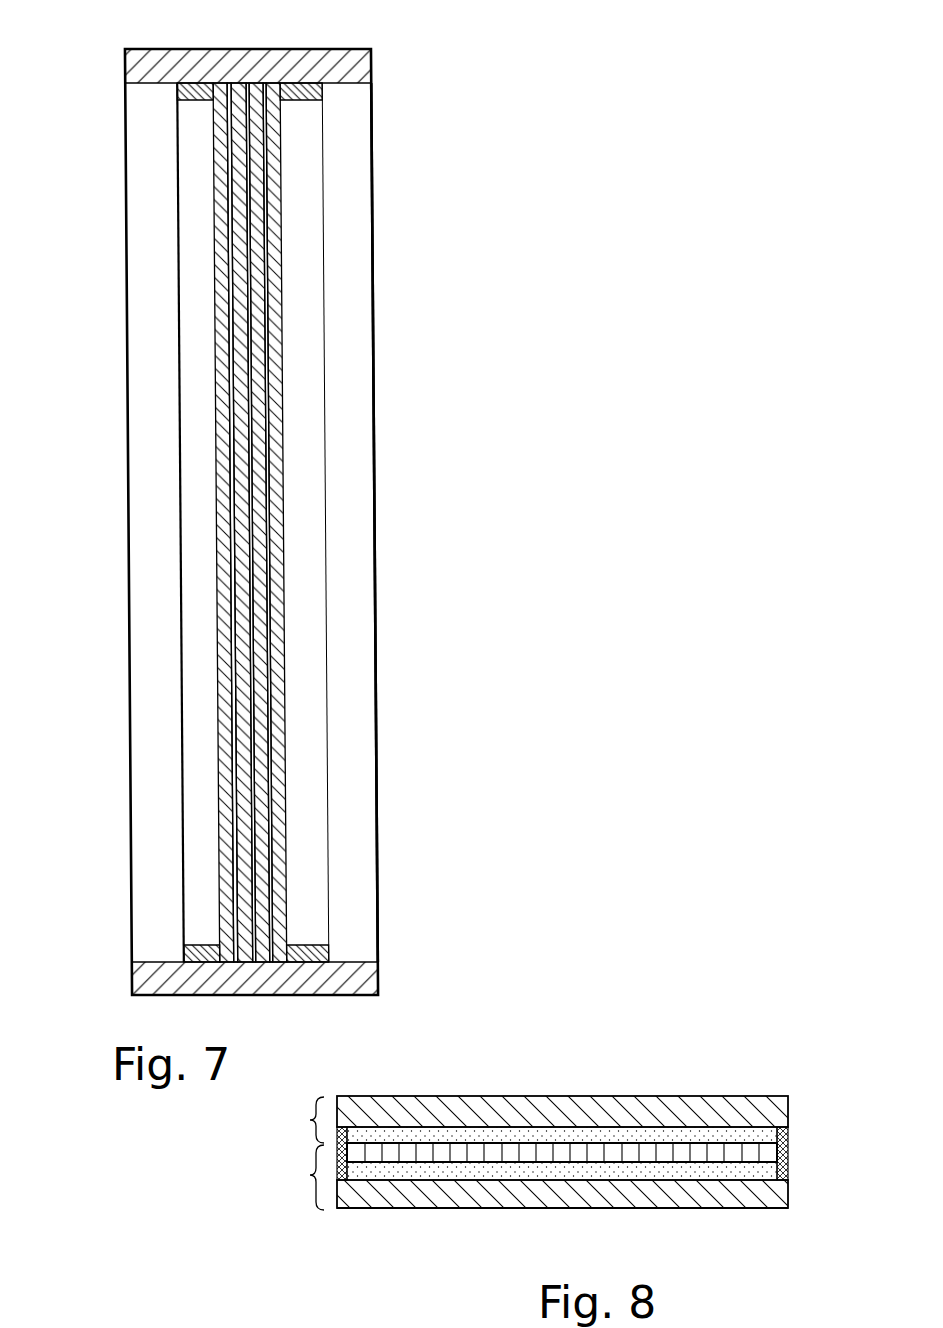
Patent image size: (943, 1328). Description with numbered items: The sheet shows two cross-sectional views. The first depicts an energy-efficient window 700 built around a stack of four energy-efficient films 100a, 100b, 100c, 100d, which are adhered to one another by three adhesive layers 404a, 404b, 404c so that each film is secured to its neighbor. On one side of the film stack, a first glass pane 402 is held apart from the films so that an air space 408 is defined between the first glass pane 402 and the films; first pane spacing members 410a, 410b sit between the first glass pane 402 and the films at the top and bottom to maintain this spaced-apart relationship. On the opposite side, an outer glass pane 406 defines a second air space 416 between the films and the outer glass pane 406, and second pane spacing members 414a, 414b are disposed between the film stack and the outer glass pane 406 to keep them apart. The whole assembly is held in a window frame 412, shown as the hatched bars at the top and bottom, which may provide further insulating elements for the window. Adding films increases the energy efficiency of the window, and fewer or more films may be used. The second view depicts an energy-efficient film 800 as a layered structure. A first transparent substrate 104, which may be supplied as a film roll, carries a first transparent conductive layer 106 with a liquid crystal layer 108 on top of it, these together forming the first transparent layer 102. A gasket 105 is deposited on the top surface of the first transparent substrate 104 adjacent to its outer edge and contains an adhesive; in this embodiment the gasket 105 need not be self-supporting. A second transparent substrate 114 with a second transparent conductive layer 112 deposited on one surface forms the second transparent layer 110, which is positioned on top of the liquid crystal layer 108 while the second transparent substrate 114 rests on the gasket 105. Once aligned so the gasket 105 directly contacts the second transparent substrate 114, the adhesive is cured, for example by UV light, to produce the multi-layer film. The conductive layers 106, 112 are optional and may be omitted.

In FIG. 7, the energy-efficient window 700 is at (424, 40).
In FIG. 7, the first glass pane 402 is at (140, 249).
In FIG. 7, the outer glass pane 406 is at (362, 222).
In FIG. 7, the air space 408 is at (190, 312).
In FIG. 7, the window frame 412 is at (372, 70).
In FIG. 7, the air space 416 is at (305, 300).
In FIG. 7, the first pane spacing member 410a is at (200, 97).
In FIG. 7, the first pane spacing member 410b is at (200, 941).
In FIG. 7, the second pane spacing member 414a is at (297, 97).
In FIG. 7, the second pane spacing member 414b is at (313, 941).
In FIG. 7, the energy-efficient film 100a is at (222, 380).
In FIG. 7, the energy-efficient film 100b is at (238, 480).
In FIG. 7, the energy-efficient film 100c is at (262, 570).
In FIG. 7, the energy-efficient film 100d is at (285, 650).
In FIG. 7, the adhesive layer 404a is at (232, 425).
In FIG. 7, the adhesive layer 404b is at (254, 510).
In FIG. 7, the adhesive layer 404c is at (270, 630).
In FIG. 8, the energy-efficient film 800 is at (606, 1066).
In FIG. 8, the first transparent layer 102 is at (291, 1177).
In FIG. 8, the first transparent substrate 104 is at (434, 1200).
In FIG. 8, the gasket 105 is at (353, 1135).
In FIG. 8, the first transparent conductive layer 106 is at (763, 1172).
In FIG. 8, the liquid crystal layer 108 is at (789, 1152).
In FIG. 8, the second transparent layer 110 is at (291, 1120).
In FIG. 8, the second transparent conductive layer 112 is at (780, 1128).
In FIG. 8, the second transparent substrate 114 is at (517, 1105).